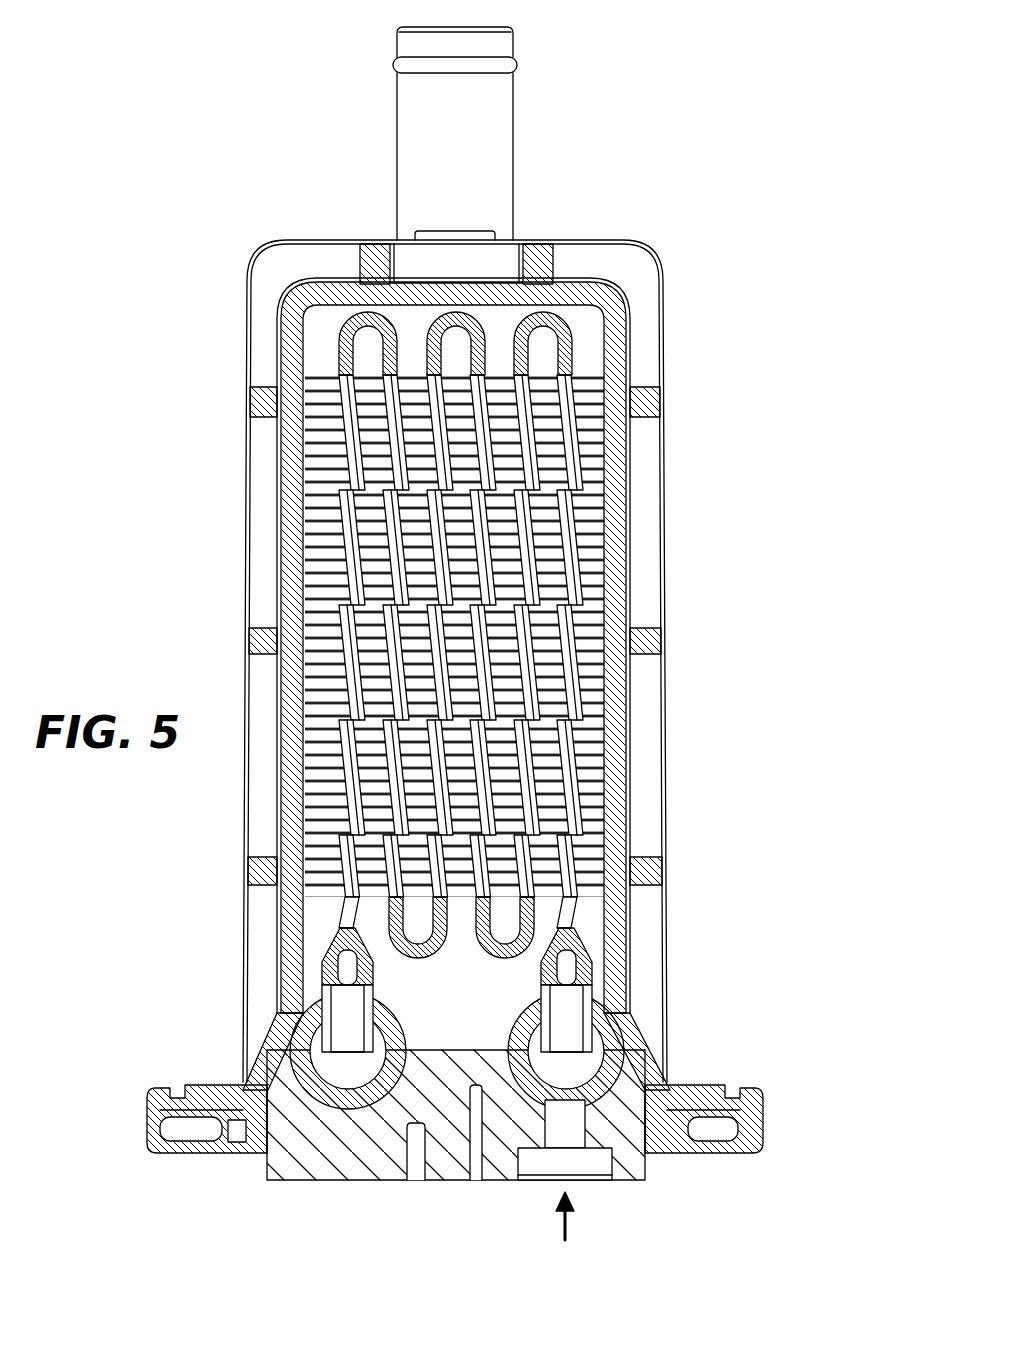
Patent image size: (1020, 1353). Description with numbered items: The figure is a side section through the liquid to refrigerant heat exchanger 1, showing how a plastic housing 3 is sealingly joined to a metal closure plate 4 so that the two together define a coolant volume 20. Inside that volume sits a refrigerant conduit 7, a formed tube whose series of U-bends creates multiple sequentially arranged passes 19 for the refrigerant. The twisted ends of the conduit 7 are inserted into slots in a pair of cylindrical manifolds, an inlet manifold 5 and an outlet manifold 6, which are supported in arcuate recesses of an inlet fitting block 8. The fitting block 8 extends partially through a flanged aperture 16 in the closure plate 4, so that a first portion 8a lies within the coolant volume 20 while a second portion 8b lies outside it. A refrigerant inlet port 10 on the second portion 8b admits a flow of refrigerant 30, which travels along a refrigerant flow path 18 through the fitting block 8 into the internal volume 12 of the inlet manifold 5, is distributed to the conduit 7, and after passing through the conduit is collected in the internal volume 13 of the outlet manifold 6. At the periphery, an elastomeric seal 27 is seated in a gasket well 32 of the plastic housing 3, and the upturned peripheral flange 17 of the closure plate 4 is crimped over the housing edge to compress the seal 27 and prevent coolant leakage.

The liquid to refrigerant heat exchanger 1 is at (633, 210).
The plastic housing 3 is at (630, 578).
The sequentially arranged passes 19 is at (487, 352).
The coolant volume 20 is at (313, 930).
The refrigerant conduit 7 is at (373, 977).
The outlet manifold 6 is at (384, 1046).
The internal volume of the outlet manifold 13 is at (360, 1067).
The internal volume of the refrigerant inlet manifold 12 is at (547, 1060).
The inlet manifold 5 is at (606, 1024).
The inlet fitting block 8 is at (370, 1182).
The first portion of the fitting block 8a is at (667, 1075).
The second portion of the fitting block 8b is at (267, 1152).
The peripheral flange 17 is at (167, 1092).
The elastomeric seal 27 is at (172, 1143).
The flanged aperture 16 is at (248, 1155).
The metal closure plate 4 is at (753, 1152).
The gasket well 32 is at (730, 1150).
The refrigerant flow path 18 is at (567, 1128).
The refrigerant inlet port 10 is at (597, 1167).
The flow of refrigerant 30 is at (575, 1224).